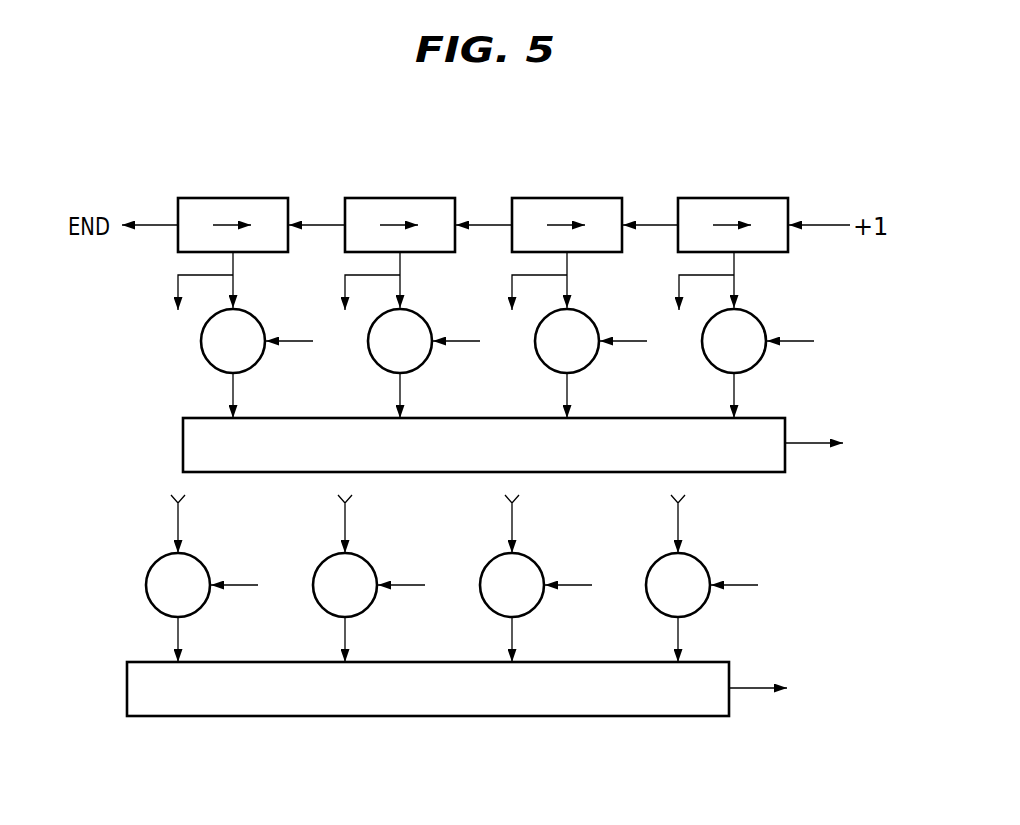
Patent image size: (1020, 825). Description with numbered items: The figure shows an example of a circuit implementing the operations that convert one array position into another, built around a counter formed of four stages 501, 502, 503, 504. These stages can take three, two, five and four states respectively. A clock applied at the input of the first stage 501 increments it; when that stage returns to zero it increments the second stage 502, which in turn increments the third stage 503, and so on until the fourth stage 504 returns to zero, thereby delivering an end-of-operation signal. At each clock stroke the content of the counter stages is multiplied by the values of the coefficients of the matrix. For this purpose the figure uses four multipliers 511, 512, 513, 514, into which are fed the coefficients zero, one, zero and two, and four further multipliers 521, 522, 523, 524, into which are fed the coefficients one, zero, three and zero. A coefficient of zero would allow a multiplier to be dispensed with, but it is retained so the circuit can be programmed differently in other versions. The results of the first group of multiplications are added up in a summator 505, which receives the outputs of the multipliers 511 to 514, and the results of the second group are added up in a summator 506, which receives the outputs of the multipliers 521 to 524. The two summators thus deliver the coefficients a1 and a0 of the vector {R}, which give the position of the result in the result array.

The first counter stage 501 is at (726, 198).
The second counter stage 502 is at (559, 198).
The third counter stage 503 is at (392, 198).
The fourth counter stage 504 is at (225, 198).
The summator 505 is at (708, 462).
The summator 506 is at (652, 707).
The multiplier 511 is at (751, 359).
The multiplier 512 is at (584, 359).
The multiplier 513 is at (417, 359).
The multiplier 514 is at (250, 359).
The multiplier 521 is at (695, 603).
The multiplier 522 is at (529, 603).
The multiplier 523 is at (362, 603).
The multiplier 524 is at (195, 603).